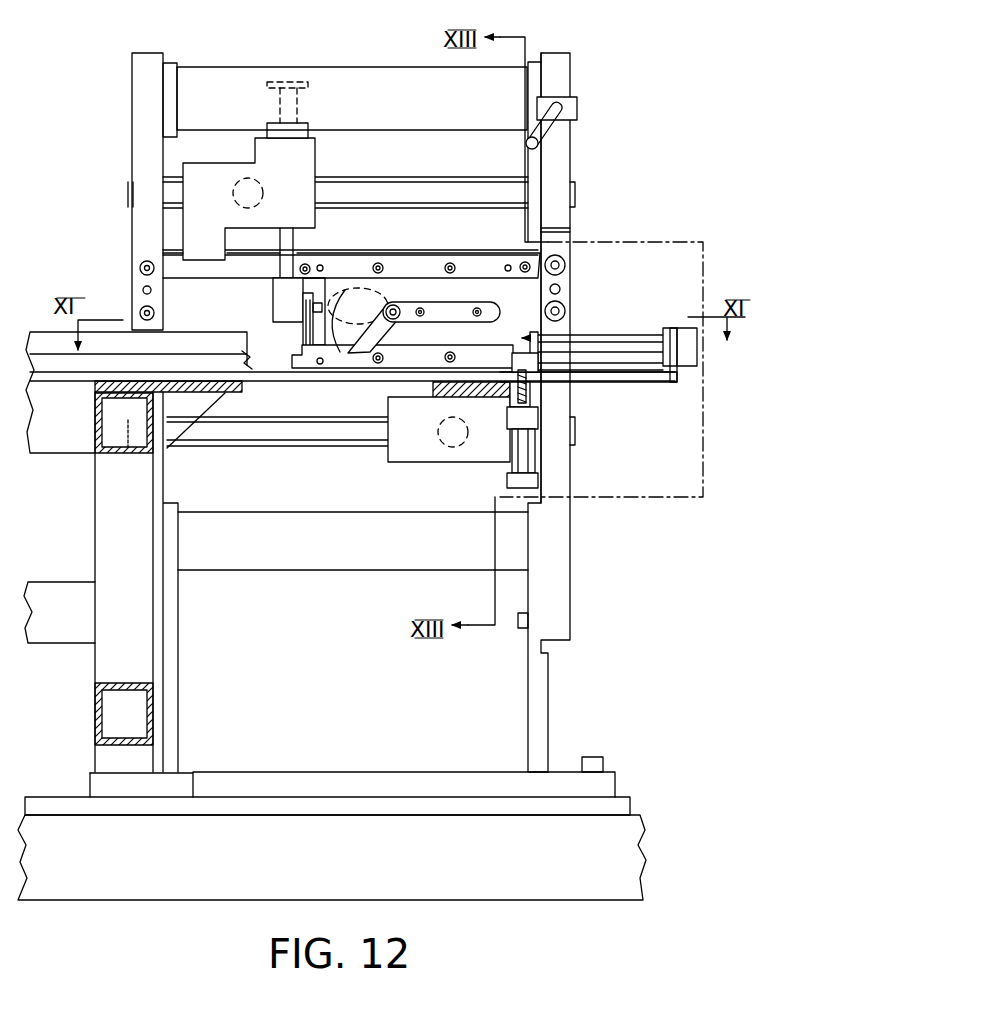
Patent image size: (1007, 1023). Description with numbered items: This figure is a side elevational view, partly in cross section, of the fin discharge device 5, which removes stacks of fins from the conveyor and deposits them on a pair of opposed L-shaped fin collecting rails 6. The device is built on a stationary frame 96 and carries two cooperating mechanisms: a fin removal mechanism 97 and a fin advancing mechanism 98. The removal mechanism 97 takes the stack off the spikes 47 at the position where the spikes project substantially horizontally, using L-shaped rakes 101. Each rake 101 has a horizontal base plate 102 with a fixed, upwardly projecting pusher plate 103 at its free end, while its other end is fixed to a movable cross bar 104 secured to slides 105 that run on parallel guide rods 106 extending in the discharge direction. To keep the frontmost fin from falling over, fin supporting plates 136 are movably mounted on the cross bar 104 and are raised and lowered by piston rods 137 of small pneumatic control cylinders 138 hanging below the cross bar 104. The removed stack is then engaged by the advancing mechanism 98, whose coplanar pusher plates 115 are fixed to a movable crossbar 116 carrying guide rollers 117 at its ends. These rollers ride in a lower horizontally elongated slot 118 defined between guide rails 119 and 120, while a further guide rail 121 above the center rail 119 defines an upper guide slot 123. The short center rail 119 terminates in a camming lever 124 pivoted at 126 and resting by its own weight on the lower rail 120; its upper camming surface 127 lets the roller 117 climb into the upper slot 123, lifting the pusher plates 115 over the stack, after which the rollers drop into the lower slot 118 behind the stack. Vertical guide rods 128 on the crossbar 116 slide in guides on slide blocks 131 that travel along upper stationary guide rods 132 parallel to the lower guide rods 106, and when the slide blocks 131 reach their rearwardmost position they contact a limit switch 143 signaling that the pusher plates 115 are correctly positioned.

The fin discharge device 5 is at (297, 722).
The fin collecting rails 6 is at (57, 350).
The spikes 47 is at (640, 340).
The stationary frame 96 is at (557, 618).
The fin removal mechanism 97 is at (683, 388).
The fin advancing mechanism 98 is at (340, 278).
The L-shaped rake 101 is at (608, 385).
The horizontal base plate 102 is at (653, 375).
The pusher plate 103 is at (673, 348).
The movable cross bar 104 is at (488, 394).
The slides 105 is at (435, 450).
The guide rods 106 is at (352, 430).
The pusher plates 115 is at (302, 312).
The movable crossbar 116 is at (275, 282).
The guide rollers 117 is at (304, 338).
The horizontally elongated slot 118 is at (473, 340).
The guide rail 119 is at (500, 310).
The guide rail 120 is at (407, 355).
The guide rail 121 is at (480, 268).
The elongated guide slot 123 is at (535, 280).
The camming lever 124 is at (380, 328).
The pivot 126 is at (402, 300).
The upper camming surface 127 is at (348, 303).
The vertical guide rods 128 is at (288, 247).
The slide blocks 131 is at (203, 183).
The stationary guide rods 132 is at (445, 190).
The fin supporting plates 136 is at (538, 350).
The piston rods 137 is at (535, 400).
The pneumatic control cylinders 138 is at (525, 453).
The limit switch 143 is at (573, 105).